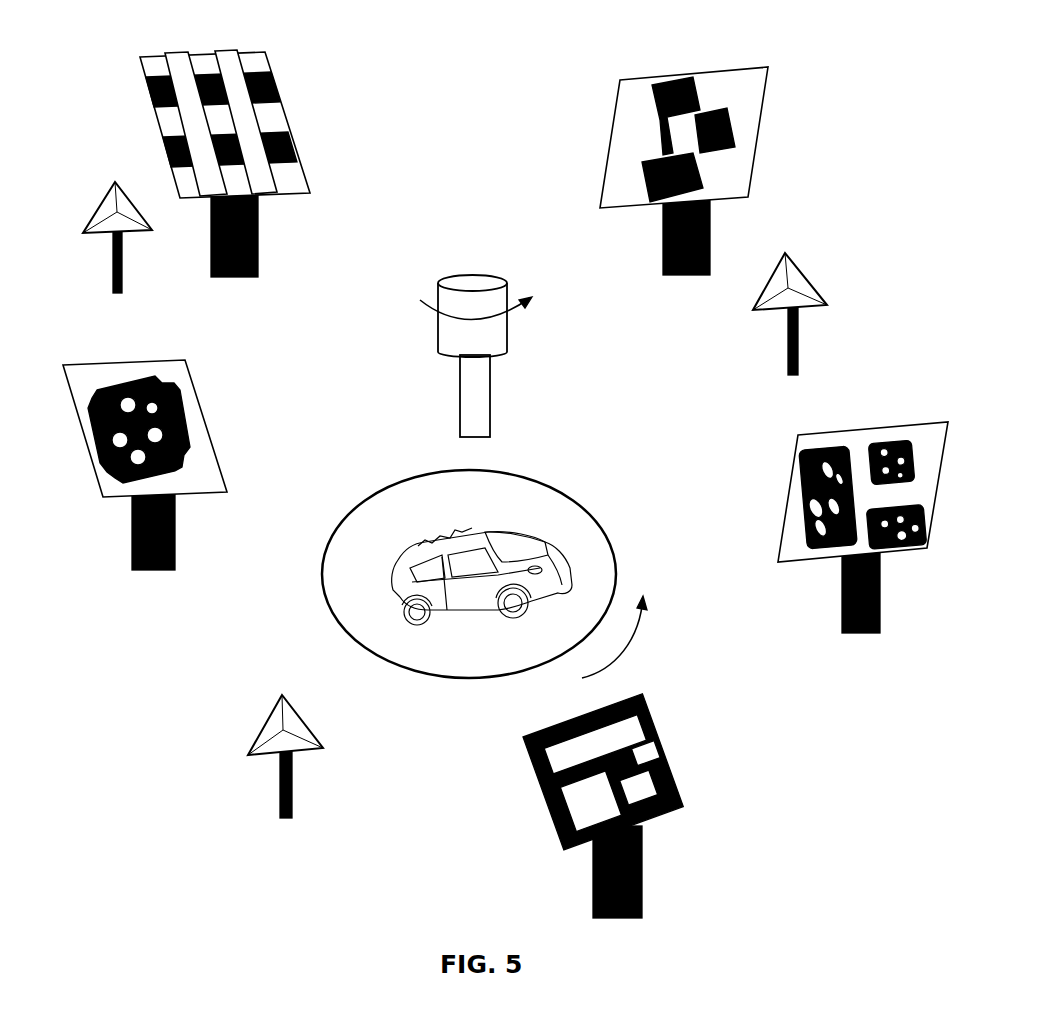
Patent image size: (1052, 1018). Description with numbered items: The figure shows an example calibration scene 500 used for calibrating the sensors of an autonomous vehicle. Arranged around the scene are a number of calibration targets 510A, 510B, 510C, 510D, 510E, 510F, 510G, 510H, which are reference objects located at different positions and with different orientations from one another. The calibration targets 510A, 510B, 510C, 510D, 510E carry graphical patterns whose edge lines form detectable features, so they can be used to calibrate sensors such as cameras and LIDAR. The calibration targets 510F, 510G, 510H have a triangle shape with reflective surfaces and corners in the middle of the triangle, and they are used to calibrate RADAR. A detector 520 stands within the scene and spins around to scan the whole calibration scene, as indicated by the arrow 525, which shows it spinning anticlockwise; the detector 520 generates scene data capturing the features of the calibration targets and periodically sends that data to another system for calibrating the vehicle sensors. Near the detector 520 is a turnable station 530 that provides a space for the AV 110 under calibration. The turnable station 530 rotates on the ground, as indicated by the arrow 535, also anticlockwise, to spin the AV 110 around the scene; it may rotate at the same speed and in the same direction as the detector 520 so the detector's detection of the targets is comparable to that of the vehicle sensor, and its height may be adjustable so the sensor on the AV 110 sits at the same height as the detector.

The calibration scene 500 is at (487, 27).
The AV 110 is at (505, 548).
The calibration target 510A is at (737, 95).
The calibration target 510B is at (932, 452).
The calibration target 510C is at (653, 715).
The calibration target 510D is at (88, 373).
The calibration target 510E is at (275, 130).
The calibration target 510F is at (107, 208).
The calibration target 510G is at (297, 730).
The calibration target 510H is at (798, 283).
The detector 520 is at (467, 290).
The arrow 525 is at (582, 312).
The turnable station 530 is at (532, 493).
The arrow 535 is at (663, 589).